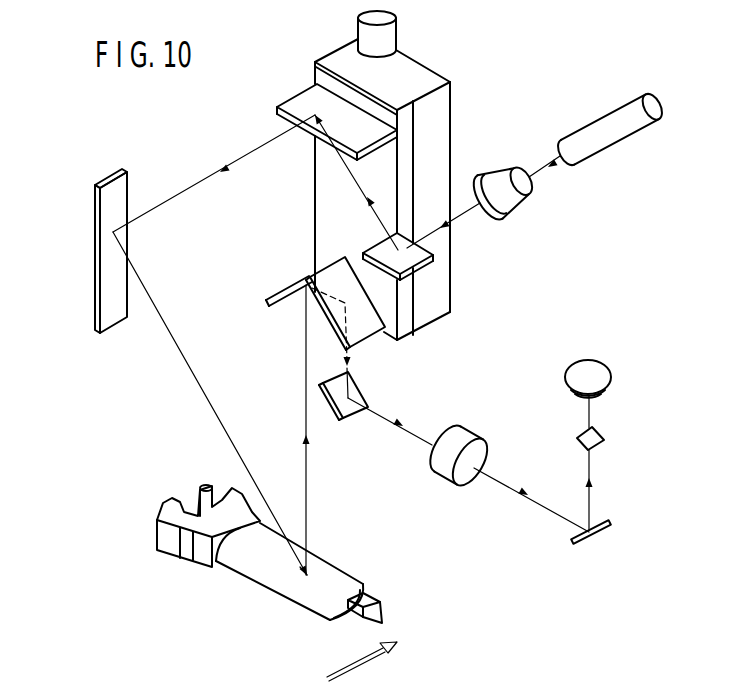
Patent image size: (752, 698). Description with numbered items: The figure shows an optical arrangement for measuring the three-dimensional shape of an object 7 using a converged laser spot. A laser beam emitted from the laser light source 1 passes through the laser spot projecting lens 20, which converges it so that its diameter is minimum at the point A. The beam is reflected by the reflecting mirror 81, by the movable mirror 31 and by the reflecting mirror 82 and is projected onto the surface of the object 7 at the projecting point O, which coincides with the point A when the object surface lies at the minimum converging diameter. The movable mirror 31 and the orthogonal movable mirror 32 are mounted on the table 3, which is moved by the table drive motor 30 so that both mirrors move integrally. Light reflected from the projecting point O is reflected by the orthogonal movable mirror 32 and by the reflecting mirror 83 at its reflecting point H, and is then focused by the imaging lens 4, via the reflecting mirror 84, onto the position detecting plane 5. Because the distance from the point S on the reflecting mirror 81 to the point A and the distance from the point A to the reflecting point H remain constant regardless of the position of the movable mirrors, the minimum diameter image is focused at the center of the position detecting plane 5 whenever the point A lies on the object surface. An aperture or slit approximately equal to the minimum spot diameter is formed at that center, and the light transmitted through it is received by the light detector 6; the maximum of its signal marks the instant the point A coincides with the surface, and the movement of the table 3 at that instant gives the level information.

The laser light source 1 is at (625, 136).
The laser spot projecting lens 20 is at (510, 204).
The table 3 is at (450, 128).
The table drive motor 30 is at (397, 33).
The movable mirror 31 is at (306, 97).
The orthogonal movable mirror 32 is at (275, 305).
The reflecting mirror 81 is at (433, 263).
The reflecting mirror 82 is at (121, 182).
The reflecting mirror 83 is at (352, 414).
The reflecting mirror 84 is at (592, 544).
The imaging lens 4 is at (468, 436).
The position detecting plane 5 is at (603, 434).
The light detector 6 is at (606, 378).
The object 7 is at (262, 573).
The reflecting point H is at (355, 392).
The projecting point O is at (312, 560).